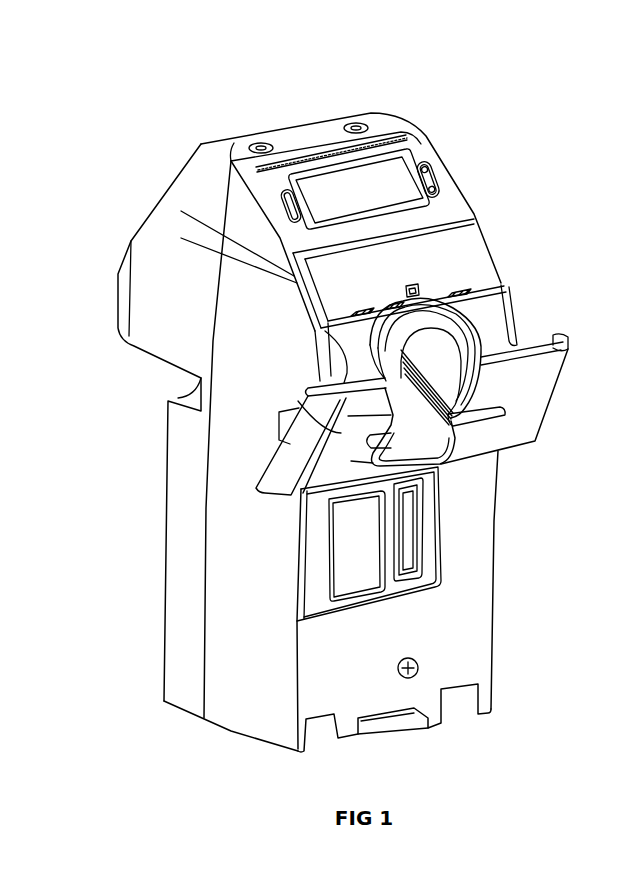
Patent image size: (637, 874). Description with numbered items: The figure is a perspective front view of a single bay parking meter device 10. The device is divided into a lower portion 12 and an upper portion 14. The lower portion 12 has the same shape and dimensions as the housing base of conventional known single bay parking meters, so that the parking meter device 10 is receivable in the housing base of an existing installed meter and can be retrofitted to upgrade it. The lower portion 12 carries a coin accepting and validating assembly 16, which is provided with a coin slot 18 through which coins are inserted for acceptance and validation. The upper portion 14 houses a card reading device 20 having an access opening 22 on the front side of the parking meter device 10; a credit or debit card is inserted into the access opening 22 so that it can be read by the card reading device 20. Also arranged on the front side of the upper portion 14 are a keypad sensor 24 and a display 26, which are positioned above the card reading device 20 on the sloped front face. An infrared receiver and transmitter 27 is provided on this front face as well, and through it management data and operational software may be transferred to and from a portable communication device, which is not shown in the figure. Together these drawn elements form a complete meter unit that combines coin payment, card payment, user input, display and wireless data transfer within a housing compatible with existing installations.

The parking meter device 10 is at (464, 98).
The lower portion 12 is at (145, 493).
The upper portion 14 is at (141, 371).
The coin accepting and validating assembly 16 is at (467, 563).
The coin slot 18 is at (414, 569).
The card reading device 20 is at (485, 318).
The access opening 22 is at (482, 430).
The keypad sensor 24 is at (472, 247).
The display 26 is at (325, 196).
The infrared receiver and transmitter 27 is at (440, 175).